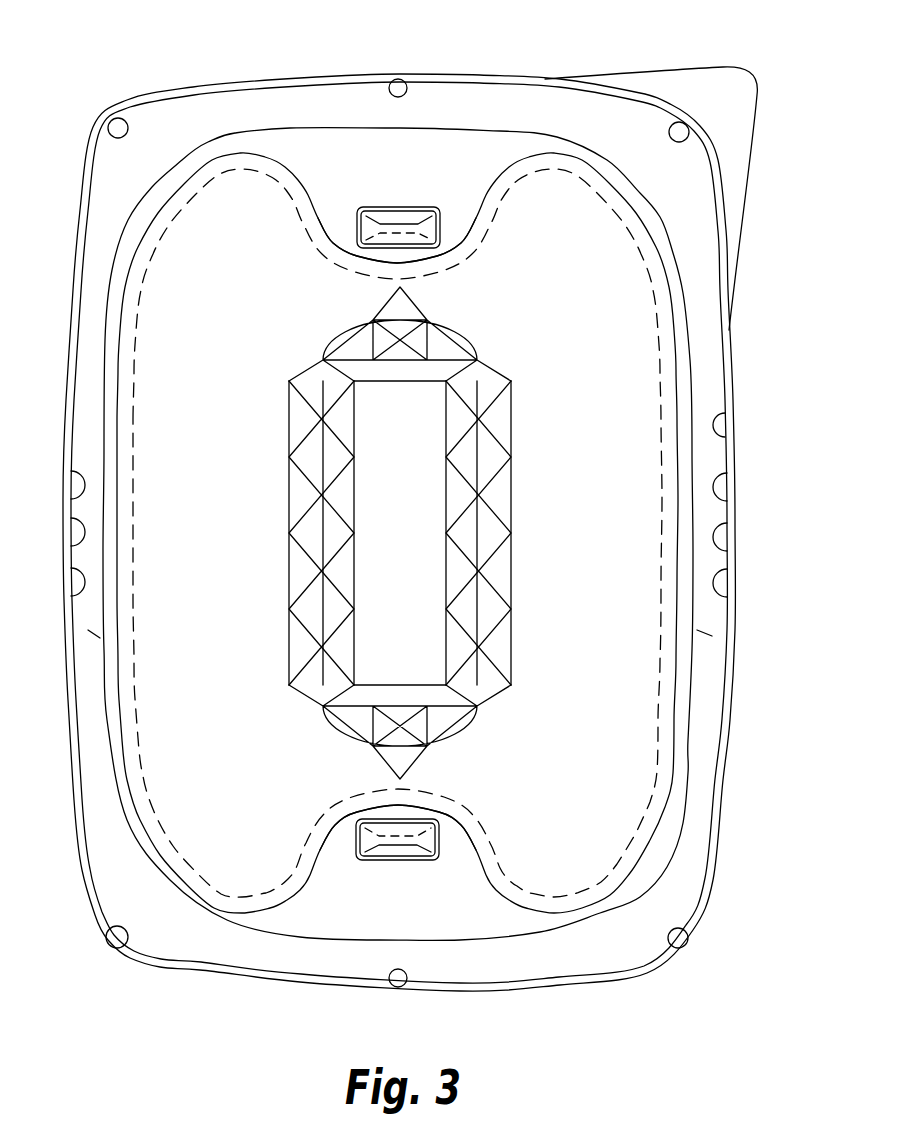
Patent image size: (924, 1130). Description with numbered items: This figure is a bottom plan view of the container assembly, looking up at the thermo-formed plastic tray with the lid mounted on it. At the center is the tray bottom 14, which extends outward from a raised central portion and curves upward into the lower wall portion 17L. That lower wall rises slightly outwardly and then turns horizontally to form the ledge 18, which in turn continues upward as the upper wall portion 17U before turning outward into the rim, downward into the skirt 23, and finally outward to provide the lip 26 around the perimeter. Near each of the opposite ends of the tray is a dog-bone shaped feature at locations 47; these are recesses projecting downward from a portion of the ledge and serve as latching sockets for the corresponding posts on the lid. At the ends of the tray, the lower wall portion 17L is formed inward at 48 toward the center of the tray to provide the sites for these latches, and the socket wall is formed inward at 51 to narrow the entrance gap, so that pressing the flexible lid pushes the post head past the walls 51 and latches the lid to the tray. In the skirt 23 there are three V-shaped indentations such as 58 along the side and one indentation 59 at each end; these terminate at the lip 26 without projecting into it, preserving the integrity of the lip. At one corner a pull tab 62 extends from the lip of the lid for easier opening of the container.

The bottom 14 is at (582, 735).
The lower wall portion 17L is at (216, 158).
The upper wall portion 17U is at (290, 128).
The ledge 18 is at (93, 637).
The skirt 23 is at (728, 418).
The lip 26 is at (734, 362).
The recess (latching socket) 47 is at (412, 198).
The inward-formed portion of lower wall 48 is at (472, 223).
The socket wall 51 is at (392, 840).
The V-shaped indentation 58 is at (793, 572).
The V-shaped indentation 59 is at (398, 79).
The pull tab 62 is at (712, 100).